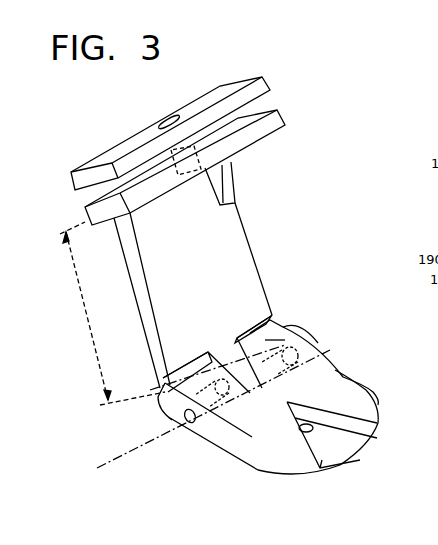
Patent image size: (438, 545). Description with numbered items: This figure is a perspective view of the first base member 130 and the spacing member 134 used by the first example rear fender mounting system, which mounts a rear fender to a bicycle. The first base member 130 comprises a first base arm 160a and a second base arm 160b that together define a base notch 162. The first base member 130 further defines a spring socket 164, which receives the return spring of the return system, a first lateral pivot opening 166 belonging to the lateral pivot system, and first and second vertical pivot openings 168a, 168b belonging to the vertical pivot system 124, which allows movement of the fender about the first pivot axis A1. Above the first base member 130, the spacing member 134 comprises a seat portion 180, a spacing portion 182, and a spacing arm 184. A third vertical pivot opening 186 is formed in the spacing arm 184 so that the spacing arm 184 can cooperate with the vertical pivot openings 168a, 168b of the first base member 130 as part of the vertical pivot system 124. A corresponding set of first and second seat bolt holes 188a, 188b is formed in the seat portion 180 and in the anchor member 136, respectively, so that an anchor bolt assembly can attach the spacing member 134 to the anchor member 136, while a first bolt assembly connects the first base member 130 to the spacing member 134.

The anchor member 136 is at (115, 150).
The second seat bolt hole 188b is at (158, 120).
The seat portion 180 is at (268, 140).
The first seat bolt hole 188a is at (200, 150).
The spacing member 134 is at (242, 277).
The spacing portion 182 is at (112, 313).
The second base arm 160b is at (268, 340).
The spacing arm 184 is at (288, 342).
The second vertical pivot opening 168b is at (300, 357).
The base notch 162 is at (330, 397).
The first base member 130 is at (358, 398).
The first lateral pivot opening 166 is at (365, 448).
The spring socket 164 is at (338, 448).
The third vertical pivot opening 186 is at (246, 382).
The vertical pivot system 124 is at (190, 424).
The first vertical pivot opening 168a is at (167, 422).
The first base arm 160a is at (167, 405).
The first pivot axis A1 is at (96, 469).